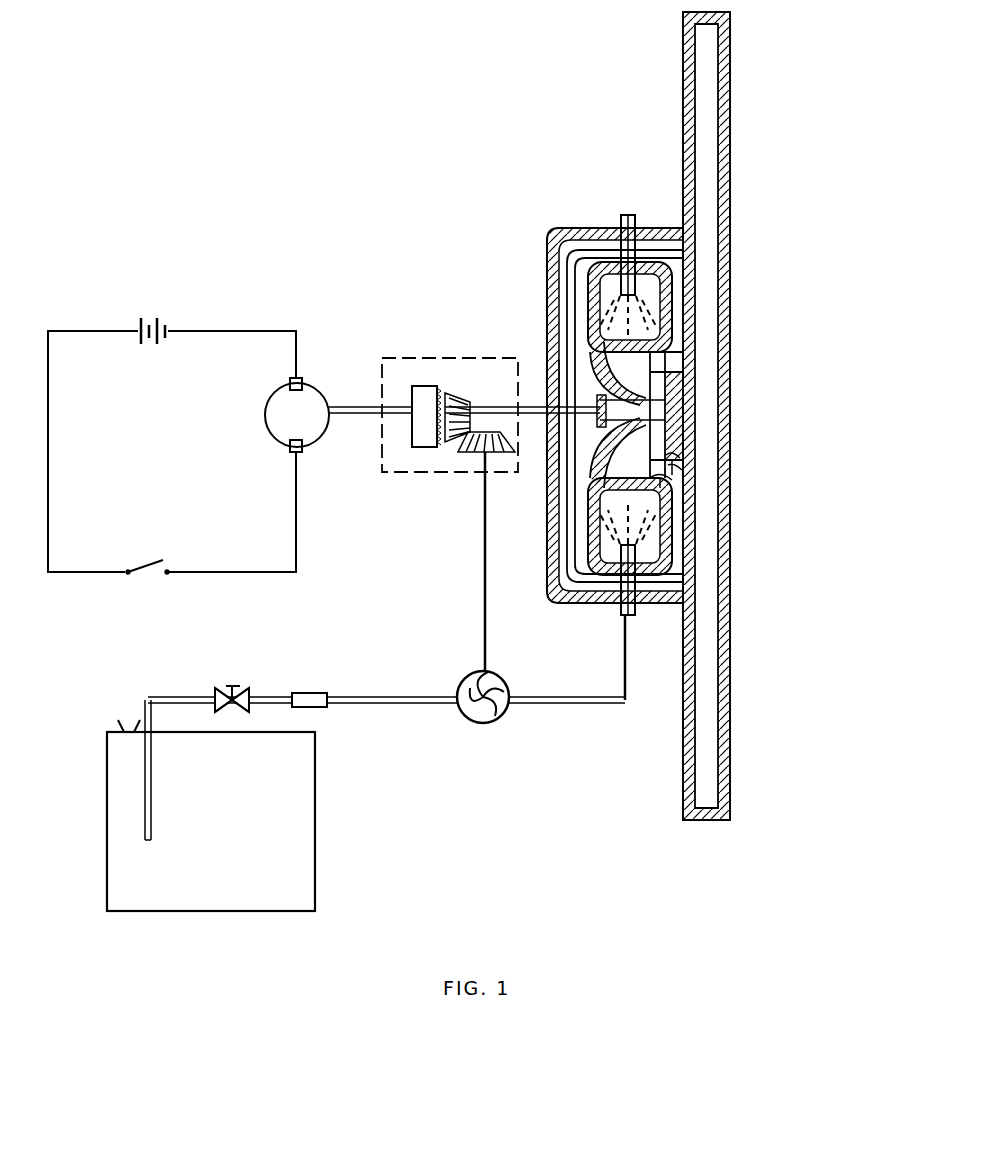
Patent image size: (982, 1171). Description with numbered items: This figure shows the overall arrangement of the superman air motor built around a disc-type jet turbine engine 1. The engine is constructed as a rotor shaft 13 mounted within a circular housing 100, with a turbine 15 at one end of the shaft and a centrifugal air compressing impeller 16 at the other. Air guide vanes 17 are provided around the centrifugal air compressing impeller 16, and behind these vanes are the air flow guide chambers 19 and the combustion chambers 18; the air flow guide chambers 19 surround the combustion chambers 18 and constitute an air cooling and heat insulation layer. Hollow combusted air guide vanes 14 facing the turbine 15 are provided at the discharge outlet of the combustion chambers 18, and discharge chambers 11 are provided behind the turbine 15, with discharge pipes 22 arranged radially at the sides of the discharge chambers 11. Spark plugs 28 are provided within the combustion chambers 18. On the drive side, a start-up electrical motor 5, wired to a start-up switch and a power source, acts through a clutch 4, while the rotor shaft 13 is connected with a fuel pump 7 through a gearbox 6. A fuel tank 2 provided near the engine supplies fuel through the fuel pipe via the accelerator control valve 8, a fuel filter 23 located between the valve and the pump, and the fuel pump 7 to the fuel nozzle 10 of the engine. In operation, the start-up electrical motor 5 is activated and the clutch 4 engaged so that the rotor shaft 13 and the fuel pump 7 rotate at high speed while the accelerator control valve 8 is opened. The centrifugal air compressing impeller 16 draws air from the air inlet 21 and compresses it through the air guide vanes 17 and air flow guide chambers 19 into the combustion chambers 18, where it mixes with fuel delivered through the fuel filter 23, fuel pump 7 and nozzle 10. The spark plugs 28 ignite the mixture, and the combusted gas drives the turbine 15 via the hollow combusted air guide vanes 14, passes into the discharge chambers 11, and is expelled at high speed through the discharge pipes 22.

The disc-type jet turbine engine 1 is at (638, 165).
The fuel tank 2 is at (285, 790).
The clutch 4 is at (430, 406).
The start-up electrical motor 5 is at (290, 400).
The gearbox 6 is at (465, 450).
The fuel pump 7 is at (485, 713).
The accelerator control valve 8 is at (228, 690).
The fuel nozzle 10 is at (615, 232).
The discharge chambers 11 is at (707, 377).
The rotor shaft 13 is at (675, 437).
The hollow combusted air guide vanes 14 is at (690, 485).
The turbine 15 is at (729, 470).
The centrifugal air compressing impeller 16 is at (548, 352).
The air guide vanes 17 is at (590, 302).
The combustion chambers 18 is at (630, 333).
The air flow guide chambers 19 is at (675, 272).
The air inlet 21 is at (596, 402).
The discharge pipes 22 is at (705, 180).
The fuel filter 23 is at (308, 692).
The spark plugs 28 is at (628, 222).
The circular housing 100 is at (548, 240).